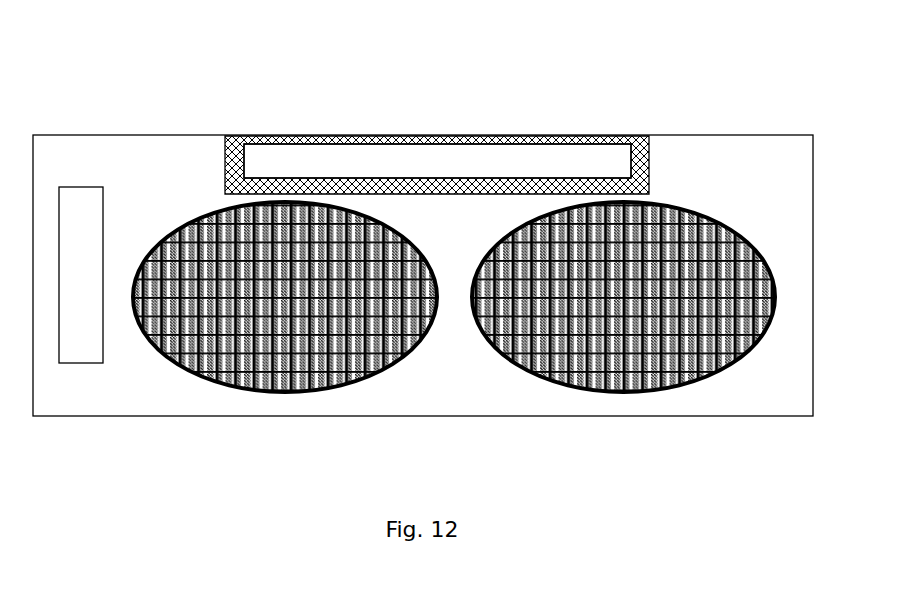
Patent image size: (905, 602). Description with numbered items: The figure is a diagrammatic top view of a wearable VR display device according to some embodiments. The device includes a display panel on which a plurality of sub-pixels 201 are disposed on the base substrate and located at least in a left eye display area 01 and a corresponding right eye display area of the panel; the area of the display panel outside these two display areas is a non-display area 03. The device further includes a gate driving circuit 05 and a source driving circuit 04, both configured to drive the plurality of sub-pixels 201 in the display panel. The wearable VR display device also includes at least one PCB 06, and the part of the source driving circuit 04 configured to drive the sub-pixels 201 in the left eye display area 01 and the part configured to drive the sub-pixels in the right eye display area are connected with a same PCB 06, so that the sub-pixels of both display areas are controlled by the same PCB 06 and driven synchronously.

The left eye display area 01 is at (363, 377).
The non-display area 03 is at (465, 368).
The source driving circuit 04 is at (320, 167).
The gate driving circuit 05 is at (85, 205).
The PCB (Printed Circuit Board) 06 is at (236, 140).
The sub-pixels 201 is at (268, 388).